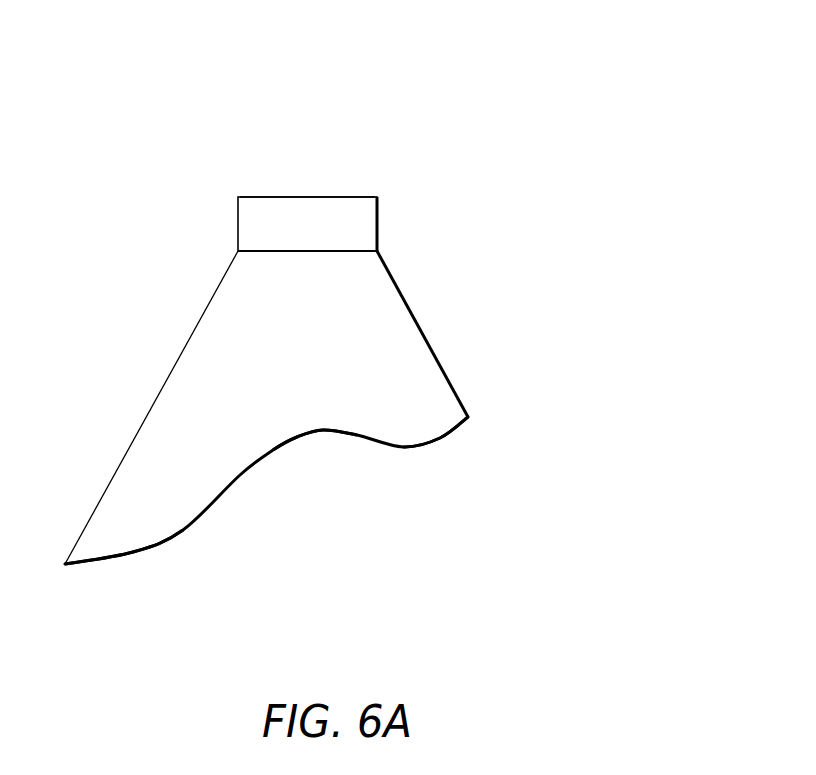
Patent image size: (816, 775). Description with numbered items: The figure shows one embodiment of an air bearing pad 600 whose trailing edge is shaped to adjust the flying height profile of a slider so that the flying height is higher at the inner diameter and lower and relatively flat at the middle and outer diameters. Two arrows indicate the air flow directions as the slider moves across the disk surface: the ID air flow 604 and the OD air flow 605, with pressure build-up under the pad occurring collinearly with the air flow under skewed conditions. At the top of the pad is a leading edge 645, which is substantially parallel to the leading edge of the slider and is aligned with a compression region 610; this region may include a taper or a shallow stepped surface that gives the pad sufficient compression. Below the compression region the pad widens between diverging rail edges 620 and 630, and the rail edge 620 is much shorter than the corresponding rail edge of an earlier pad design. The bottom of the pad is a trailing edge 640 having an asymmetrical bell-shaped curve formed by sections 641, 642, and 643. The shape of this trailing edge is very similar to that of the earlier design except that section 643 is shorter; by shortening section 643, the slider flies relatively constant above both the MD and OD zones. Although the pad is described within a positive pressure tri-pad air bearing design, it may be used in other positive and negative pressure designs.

The air bearing pad 600 is at (593, 158).
The ID air flow arrow 604 is at (385, 172).
The OD air flow arrow 605 is at (228, 172).
The compression region 610 is at (380, 220).
The rail edge 620 is at (443, 367).
The rail edge 630 is at (142, 425).
The trailing edge 640 is at (327, 558).
The section of trailing edge 641 is at (132, 553).
The section of trailing edge 642 is at (293, 438).
The section of trailing edge 643 is at (432, 442).
The leading edge 645 is at (302, 208).